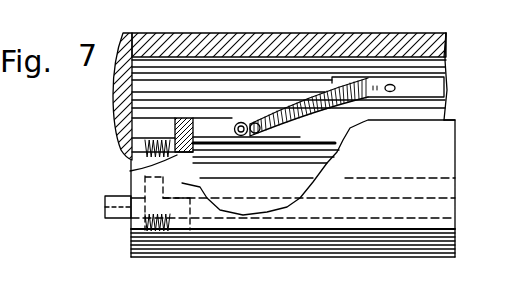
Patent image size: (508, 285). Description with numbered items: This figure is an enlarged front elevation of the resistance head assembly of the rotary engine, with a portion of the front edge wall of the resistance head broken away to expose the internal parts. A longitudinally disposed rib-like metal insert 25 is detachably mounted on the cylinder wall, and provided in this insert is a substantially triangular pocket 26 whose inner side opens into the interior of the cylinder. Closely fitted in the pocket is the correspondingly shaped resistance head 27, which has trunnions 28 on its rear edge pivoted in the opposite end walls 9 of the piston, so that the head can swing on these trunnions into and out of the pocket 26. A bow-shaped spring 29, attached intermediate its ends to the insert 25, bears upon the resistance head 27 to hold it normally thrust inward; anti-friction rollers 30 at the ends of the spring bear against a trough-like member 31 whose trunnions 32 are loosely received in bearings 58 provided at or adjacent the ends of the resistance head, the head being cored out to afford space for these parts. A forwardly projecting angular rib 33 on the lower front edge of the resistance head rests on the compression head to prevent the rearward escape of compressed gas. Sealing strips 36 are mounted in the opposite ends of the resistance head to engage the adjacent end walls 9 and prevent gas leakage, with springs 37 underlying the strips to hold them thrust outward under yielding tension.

The circular plate 9 is at (116, 99).
The rib-like metal insert 25 is at (334, 45).
The pocket 26 is at (262, 68).
The resistance head 27 is at (447, 153).
The trunnion 28 is at (105, 206).
The bow-shaped spring 29 is at (289, 108).
The anti-friction roller 30 is at (239, 128).
The trough-like member 31 is at (357, 131).
The trunnion 32 is at (130, 171).
The angular rib 33 is at (385, 254).
The sealing strip 36 is at (131, 226).
The spring 37 is at (158, 252).
The bearing 58 is at (131, 131).